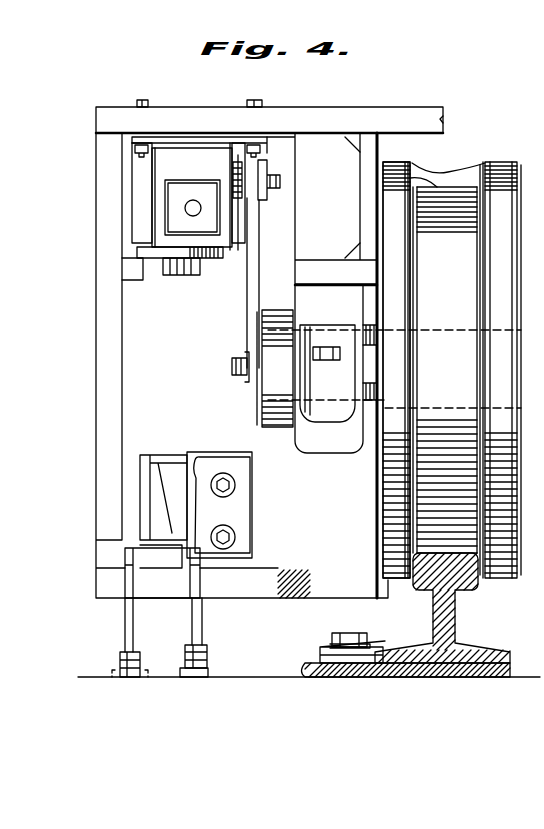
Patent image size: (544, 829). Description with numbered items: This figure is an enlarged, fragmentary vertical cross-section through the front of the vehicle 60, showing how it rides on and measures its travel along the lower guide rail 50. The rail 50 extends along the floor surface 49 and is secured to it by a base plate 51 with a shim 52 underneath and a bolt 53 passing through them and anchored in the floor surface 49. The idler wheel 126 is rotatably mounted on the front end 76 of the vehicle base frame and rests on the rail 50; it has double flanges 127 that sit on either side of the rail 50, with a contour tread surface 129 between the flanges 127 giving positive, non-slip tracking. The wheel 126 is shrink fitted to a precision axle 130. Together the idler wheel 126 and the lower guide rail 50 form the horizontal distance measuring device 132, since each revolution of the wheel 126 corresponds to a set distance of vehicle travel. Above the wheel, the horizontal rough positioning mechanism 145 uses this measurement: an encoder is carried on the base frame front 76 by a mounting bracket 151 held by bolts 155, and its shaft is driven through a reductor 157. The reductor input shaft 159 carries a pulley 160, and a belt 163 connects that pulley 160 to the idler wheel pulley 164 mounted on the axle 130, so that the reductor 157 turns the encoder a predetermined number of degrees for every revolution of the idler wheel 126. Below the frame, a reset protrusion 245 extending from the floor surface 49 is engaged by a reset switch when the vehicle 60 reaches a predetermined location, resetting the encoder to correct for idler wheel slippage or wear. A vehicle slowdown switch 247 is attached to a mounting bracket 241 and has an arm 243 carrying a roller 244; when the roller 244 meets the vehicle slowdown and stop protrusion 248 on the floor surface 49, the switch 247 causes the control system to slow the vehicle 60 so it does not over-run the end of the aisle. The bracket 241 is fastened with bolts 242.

The floor surface 49 is at (253, 677).
The lower guide rail 50 is at (470, 590).
The base plate 51 is at (320, 666).
The shim 52 is at (320, 647).
The bolt 53 is at (362, 635).
The vehicle 60 is at (96, 107).
The front end of base frame 76 is at (443, 107).
The idler wheel 126 is at (497, 163).
The wheel flanges 127 is at (413, 163).
The contour tread surface 129 is at (413, 180).
The precision axle 130 is at (273, 407).
The horizontal distance measuring device 132 is at (519, 263).
The horizontal rough positioning mechanism 145 is at (140, 258).
The mounting bracket 151 is at (273, 118).
The bolt 155 is at (139, 107).
The reductor 157 is at (222, 258).
The reductor input shaft 159 is at (238, 158).
The pulley 160 is at (267, 162).
The belt 163 is at (257, 257).
The idler wheel pulley 164 is at (240, 387).
The mounting bracket 241 is at (193, 452).
The bracket bolts 242 is at (233, 537).
The arm 243 is at (189, 584).
The roller 244 is at (204, 650).
The reset protrusion 245 is at (180, 668).
The vehicle slowdown switch 247 is at (145, 455).
The vehicle slowdown and stop protrusion 248 is at (112, 670).